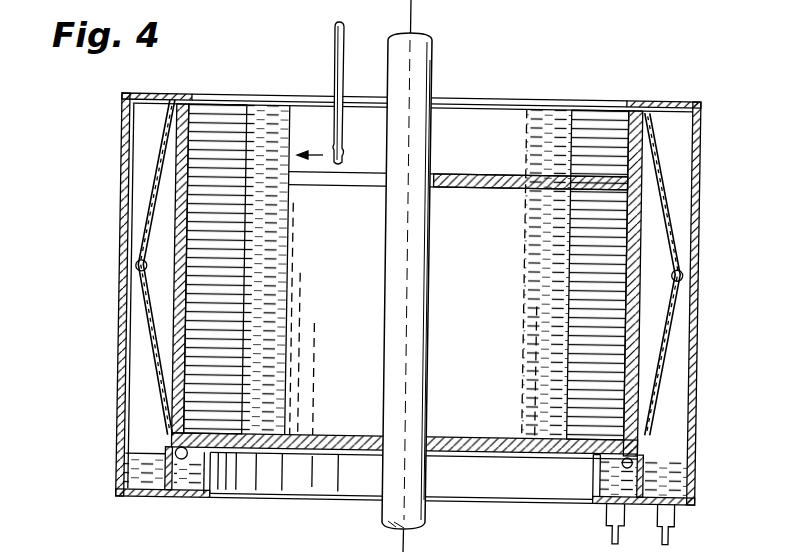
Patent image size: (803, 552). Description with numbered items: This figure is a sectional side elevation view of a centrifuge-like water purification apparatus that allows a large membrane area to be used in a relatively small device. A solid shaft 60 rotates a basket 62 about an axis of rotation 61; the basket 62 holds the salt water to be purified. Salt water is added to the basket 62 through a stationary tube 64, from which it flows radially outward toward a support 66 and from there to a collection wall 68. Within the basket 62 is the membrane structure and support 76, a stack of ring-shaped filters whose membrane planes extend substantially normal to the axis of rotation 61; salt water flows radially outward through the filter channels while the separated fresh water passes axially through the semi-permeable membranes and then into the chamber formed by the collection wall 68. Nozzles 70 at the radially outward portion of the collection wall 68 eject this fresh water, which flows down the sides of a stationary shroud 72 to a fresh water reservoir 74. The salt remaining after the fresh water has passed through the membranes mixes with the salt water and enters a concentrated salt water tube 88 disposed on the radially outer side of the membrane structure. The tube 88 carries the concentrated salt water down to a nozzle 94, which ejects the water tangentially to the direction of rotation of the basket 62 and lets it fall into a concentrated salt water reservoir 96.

The solid shaft 60 is at (432, 78).
The axis of rotation 61 is at (411, 17).
The basket 62 is at (666, 149).
The stationary tube 64 is at (343, 60).
The support 66 is at (650, 205).
The collection wall 68 is at (668, 229).
The nozzles 70 is at (683, 271).
The stationary shroud 72 is at (666, 103).
The fresh water reservoir 74 is at (690, 465).
The membrane structure and support 76 is at (604, 123).
The concentrated salt water tube 88 is at (620, 456).
The nozzle 94 is at (632, 461).
The concentrated salt water reservoir 96 is at (607, 506).